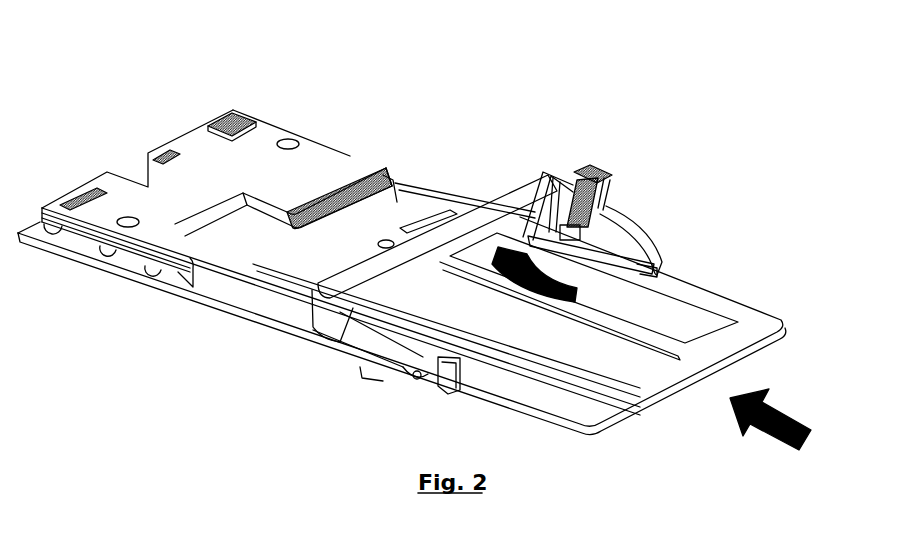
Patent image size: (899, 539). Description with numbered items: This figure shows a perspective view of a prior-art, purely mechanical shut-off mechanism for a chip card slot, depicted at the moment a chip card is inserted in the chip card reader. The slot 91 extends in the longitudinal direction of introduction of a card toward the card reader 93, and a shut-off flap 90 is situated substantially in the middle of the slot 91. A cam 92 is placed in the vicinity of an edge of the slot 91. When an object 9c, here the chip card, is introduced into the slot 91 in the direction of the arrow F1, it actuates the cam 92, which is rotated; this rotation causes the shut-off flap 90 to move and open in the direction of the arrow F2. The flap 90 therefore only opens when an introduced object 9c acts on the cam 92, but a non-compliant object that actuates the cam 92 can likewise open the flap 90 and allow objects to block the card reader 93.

The object 9c is at (688, 318).
The card reader 93 is at (262, 122).
The slot 91 is at (398, 180).
The shut-off flap 90 is at (330, 320).
The cam 92 is at (528, 198).
The arrow F1 is at (768, 408).
The arrow F2 is at (510, 248).